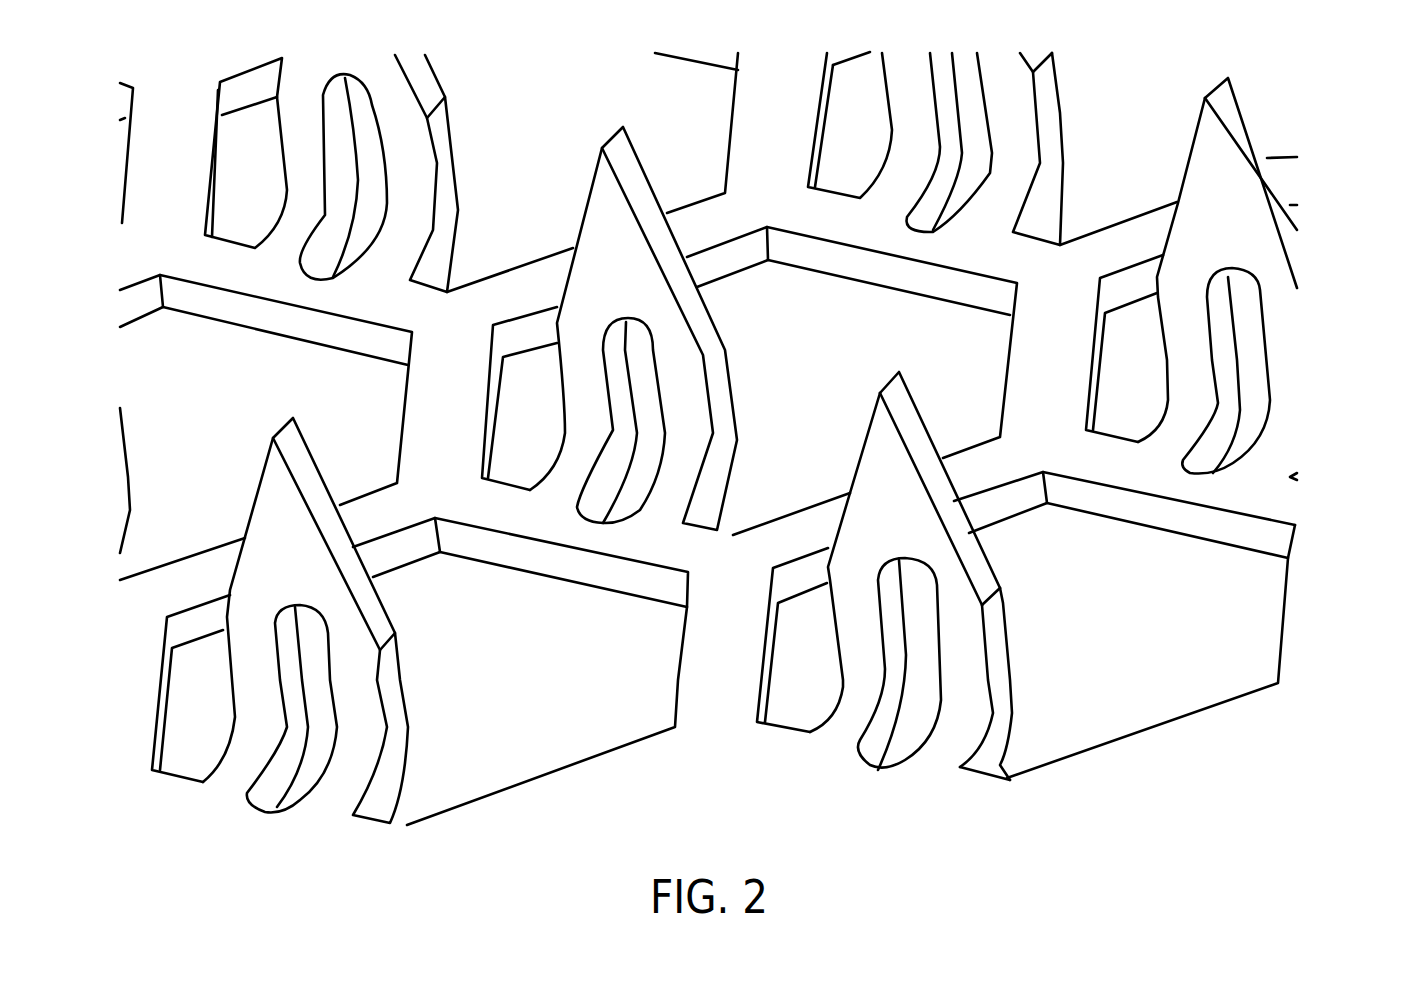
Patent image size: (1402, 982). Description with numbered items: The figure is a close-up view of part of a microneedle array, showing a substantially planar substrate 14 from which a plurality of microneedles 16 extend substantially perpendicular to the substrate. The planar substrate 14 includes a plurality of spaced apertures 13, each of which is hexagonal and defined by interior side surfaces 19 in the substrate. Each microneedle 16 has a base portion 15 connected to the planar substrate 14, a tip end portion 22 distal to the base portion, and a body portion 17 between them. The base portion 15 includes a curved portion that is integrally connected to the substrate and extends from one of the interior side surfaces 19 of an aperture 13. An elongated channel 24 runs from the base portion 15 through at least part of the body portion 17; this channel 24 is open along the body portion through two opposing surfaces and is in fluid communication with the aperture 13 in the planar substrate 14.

The aperture 13 is at (1222, 617).
The planar substrate 14 is at (1035, 372).
The base portion 15 is at (955, 735).
The microneedle 16 is at (950, 690).
The body portion 17 is at (957, 648).
The interior side surface 19 is at (1212, 530).
The tip end portion 22 is at (897, 478).
The elongated channel 24 is at (910, 613).